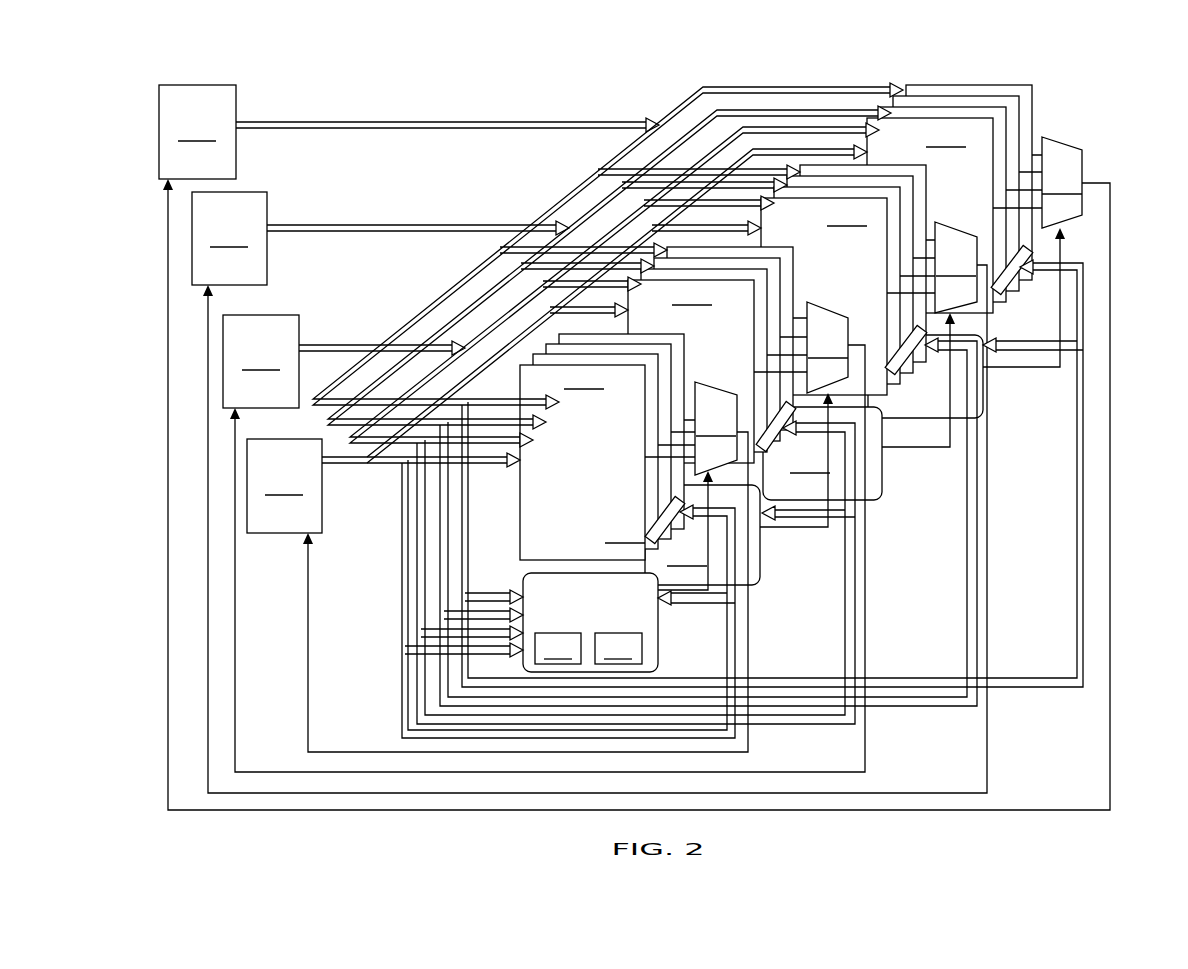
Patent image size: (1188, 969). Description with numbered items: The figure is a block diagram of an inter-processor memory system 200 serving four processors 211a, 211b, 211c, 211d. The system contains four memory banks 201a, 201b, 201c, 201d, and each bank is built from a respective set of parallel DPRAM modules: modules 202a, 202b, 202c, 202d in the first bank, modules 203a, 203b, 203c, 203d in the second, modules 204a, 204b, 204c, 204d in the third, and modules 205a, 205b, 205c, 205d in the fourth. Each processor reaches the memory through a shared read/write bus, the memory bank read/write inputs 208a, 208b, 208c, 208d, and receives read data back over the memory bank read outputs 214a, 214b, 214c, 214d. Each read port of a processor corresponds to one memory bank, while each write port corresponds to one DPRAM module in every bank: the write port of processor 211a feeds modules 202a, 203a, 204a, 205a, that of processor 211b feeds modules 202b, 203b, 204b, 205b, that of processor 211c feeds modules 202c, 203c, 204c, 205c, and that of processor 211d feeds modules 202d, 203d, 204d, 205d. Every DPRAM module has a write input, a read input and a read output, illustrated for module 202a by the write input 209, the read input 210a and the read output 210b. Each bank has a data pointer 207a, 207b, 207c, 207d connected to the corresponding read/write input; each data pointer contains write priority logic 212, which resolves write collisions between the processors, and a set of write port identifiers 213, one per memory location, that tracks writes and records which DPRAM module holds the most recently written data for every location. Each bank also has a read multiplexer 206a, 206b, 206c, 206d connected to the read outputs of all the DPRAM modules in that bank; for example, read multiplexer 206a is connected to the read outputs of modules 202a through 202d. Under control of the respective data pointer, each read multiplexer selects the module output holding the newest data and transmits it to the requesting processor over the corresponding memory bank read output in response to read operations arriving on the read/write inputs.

The inter-processor memory system 200 is at (333, 74).
The memory bank 201a is at (465, 305).
The memory bank 201b is at (625, 250).
The memory bank 201c is at (752, 170).
The memory bank 201d is at (944, 72).
The DPRAM module 202a is at (582, 462).
The DPRAM module 202b is at (533, 354).
The DPRAM module 202c is at (548, 341).
The DPRAM module 202d is at (565, 326).
The DPRAM module 203a is at (691, 371).
The DPRAM module 203b is at (740, 272).
The DPRAM module 203c is at (777, 267).
The DPRAM module 203d is at (790, 275).
The DPRAM module 204a is at (824, 296).
The DPRAM module 204b is at (853, 190).
The DPRAM module 204c is at (908, 208).
The DPRAM module 204d is at (920, 182).
The DPRAM module 205a is at (930, 215).
The DPRAM module 205b is at (940, 112).
The DPRAM module 205c is at (1015, 118).
The DPRAM module 205d is at (1015, 88).
The read multiplexer 206a is at (716, 428).
The read multiplexer 206b is at (827, 347).
The read multiplexer 206c is at (956, 267).
The read multiplexer 206d is at (1062, 182).
The data pointer 207a is at (623, 622).
The data pointer 207b is at (702, 535).
The data pointer 207c is at (822, 453).
The data pointer 207d is at (944, 411).
The memory bank read/write input 208a is at (358, 478).
The memory bank read/write input 208b is at (332, 335).
The memory bank read/write input 208c is at (362, 215).
The memory bank read/write input 208d is at (381, 115).
The write input 209 is at (505, 470).
The read input 210a is at (645, 520).
The read output 210b is at (648, 455).
The processor 211a is at (284, 486).
The processor 211b is at (261, 361).
The processor 211c is at (229, 238).
The processor 211d is at (197, 132).
The write priority logic 212 is at (558, 648).
The set of write port identifiers 213 is at (660, 628).
The memory bank read output 214a is at (762, 618).
The memory bank read output 214b is at (878, 589).
The memory bank read output 214c is at (1000, 531).
The memory bank read output 214d is at (1123, 599).